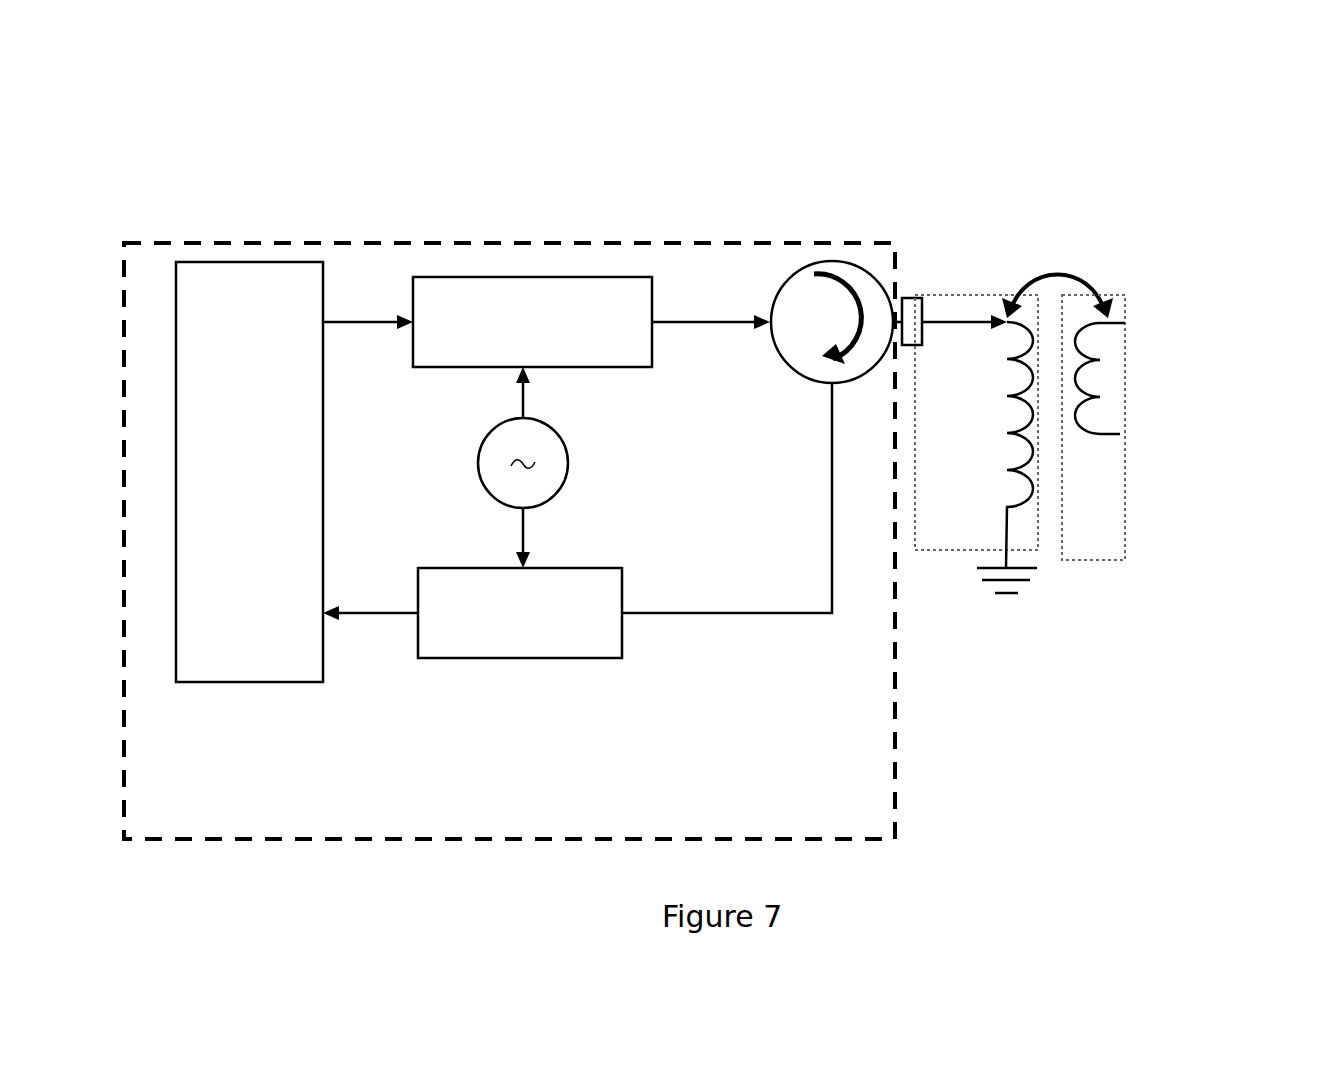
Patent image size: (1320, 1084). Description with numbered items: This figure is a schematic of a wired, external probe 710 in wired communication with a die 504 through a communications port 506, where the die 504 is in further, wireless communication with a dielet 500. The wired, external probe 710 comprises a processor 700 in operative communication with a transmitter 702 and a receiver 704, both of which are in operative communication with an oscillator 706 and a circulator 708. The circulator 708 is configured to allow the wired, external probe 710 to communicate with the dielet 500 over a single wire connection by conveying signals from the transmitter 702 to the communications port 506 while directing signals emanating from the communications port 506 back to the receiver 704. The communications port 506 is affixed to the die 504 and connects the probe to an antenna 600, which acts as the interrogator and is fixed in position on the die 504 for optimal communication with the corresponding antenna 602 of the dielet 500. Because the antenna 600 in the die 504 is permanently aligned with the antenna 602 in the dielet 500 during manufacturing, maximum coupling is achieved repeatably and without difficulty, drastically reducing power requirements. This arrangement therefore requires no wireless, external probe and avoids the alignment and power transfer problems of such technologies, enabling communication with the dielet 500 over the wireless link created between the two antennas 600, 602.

The processor 700 is at (262, 262).
The transmitter 702 is at (500, 277).
The receiver 704 is at (498, 658).
The oscillator 706 is at (568, 463).
The circulator 708 is at (837, 260).
The wired, external probe 710 is at (662, 243).
The communications port 506 is at (915, 298).
The die 504 is at (963, 293).
The dielet 500 is at (1127, 380).
The antenna 600 is at (1003, 527).
The antenna 602 is at (1100, 437).